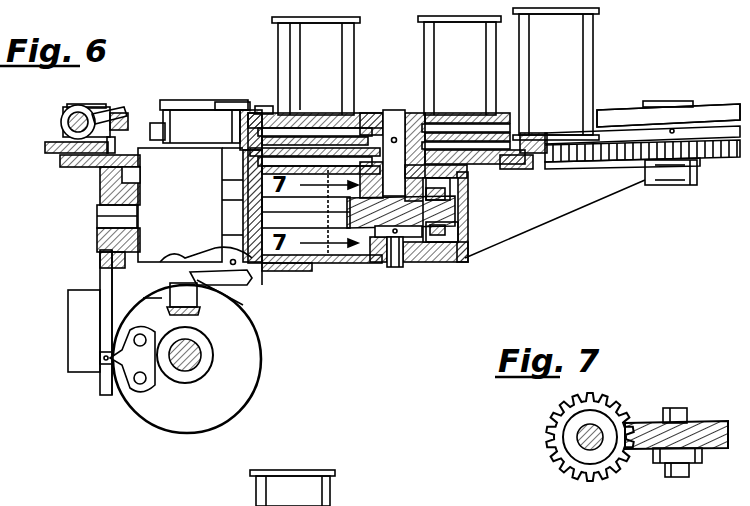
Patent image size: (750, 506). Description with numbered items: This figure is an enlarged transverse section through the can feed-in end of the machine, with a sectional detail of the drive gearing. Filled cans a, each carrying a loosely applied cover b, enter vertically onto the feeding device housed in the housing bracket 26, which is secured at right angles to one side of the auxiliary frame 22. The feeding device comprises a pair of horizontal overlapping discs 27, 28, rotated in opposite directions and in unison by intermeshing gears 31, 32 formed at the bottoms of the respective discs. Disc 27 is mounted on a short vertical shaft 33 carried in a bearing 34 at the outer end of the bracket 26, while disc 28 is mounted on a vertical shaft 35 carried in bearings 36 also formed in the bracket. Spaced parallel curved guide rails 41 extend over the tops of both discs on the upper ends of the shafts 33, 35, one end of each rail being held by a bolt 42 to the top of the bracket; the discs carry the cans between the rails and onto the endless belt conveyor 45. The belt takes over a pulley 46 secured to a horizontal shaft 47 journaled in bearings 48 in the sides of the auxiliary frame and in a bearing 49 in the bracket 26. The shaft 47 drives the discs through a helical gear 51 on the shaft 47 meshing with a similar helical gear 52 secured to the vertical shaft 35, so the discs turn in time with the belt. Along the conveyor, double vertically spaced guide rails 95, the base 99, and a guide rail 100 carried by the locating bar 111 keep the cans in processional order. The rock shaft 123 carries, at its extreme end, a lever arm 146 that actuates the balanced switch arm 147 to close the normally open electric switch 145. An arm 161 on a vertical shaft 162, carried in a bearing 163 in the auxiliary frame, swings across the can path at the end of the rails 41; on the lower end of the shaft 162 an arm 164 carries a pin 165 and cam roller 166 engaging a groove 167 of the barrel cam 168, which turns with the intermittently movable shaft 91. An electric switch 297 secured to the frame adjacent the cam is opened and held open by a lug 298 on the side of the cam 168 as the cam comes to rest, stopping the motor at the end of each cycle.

In FIG. 6, the filled can a is at (285, 44).
In FIG. 6, the cover b is at (358, 20).
In FIG. 6, the auxiliary frame 22 is at (62, 164).
In FIG. 6, the housing bracket 26 is at (522, 234).
In FIG. 6, the disc 27 is at (718, 118).
In FIG. 6, the disc 28 is at (528, 138).
In FIG. 6, the gear 31 is at (608, 162).
In FIG. 6, the gear 32 is at (542, 146).
In FIG. 6, the vertical shaft 33 is at (667, 101).
In FIG. 6, the bearing 34 is at (698, 176).
In FIG. 6, the vertical shaft 35 is at (395, 270).
In FIG. 7, the vertical shaft 35 is at (674, 408).
In FIG. 6, the bearing 36 is at (458, 180).
In FIG. 6, the guide rail 41 is at (392, 112).
In FIG. 6, the bolt 42 is at (264, 106).
In FIG. 6, the belt conveyor 45 is at (150, 133).
In FIG. 6, the pulley 46 is at (190, 205).
In FIG. 6, the horizontal shaft 47 is at (97, 222).
In FIG. 7, the horizontal shaft 47 is at (580, 433).
In FIG. 6, the bearing 48 is at (100, 196).
In FIG. 6, the bearing 49 is at (468, 220).
In FIG. 7, the helical gear 51 is at (565, 461).
In FIG. 6, the helical gear 52 is at (372, 240).
In FIG. 7, the helical gear 52 is at (722, 430).
In FIG. 6, the intermittently movable shaft 91 is at (202, 362).
In FIG. 6, the guide rail 95 is at (338, 505).
In FIG. 6, the base 99 is at (45, 147).
In FIG. 6, the guide rail 100 is at (250, 476).
In FIG. 6, the locating bar 111 is at (195, 497).
In FIG. 6, the rock shaft 123 is at (62, 120).
In FIG. 6, the electric switch 145 is at (95, 110).
In FIG. 6, the lever arm 146 is at (115, 115).
In FIG. 6, the balanced switch arm 147 is at (125, 122).
In FIG. 6, the arm 161 is at (194, 104).
In FIG. 6, the vertical shaft 162 is at (230, 103).
In FIG. 6, the bearing 163 is at (262, 275).
In FIG. 6, the arm 164 is at (238, 300).
In FIG. 6, the pin 165 is at (188, 258).
In FIG. 6, the cam roller 166 is at (200, 307).
In FIG. 6, the groove 167 is at (150, 300).
In FIG. 6, the barrel cam 168 is at (248, 401).
In FIG. 6, the electric switch 297 is at (70, 328).
In FIG. 6, the lug 298 is at (130, 372).